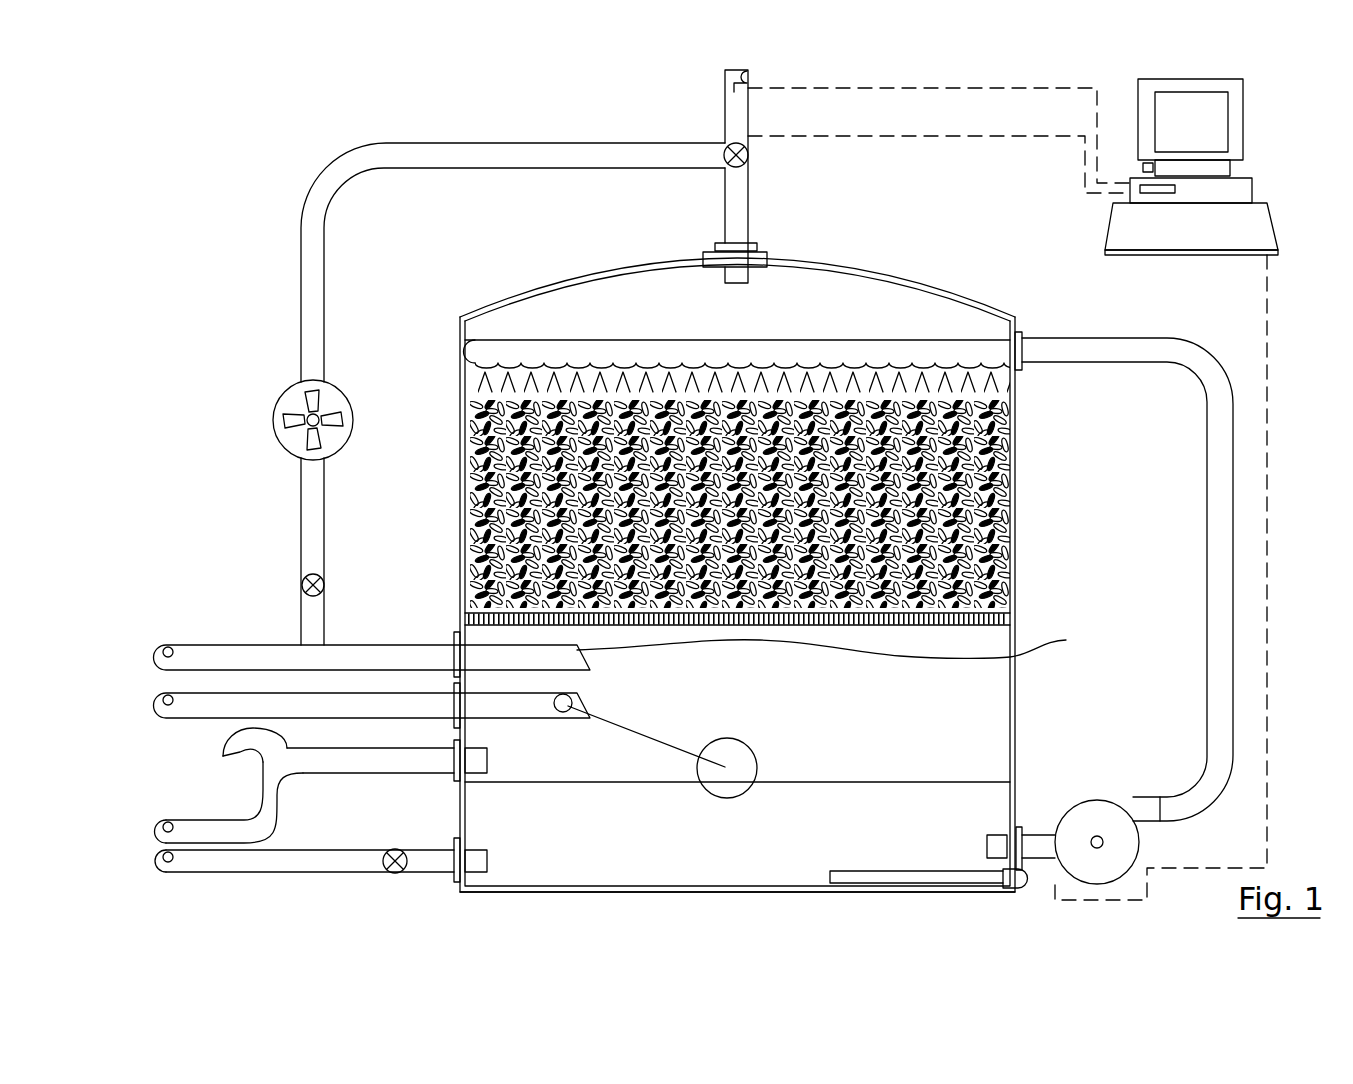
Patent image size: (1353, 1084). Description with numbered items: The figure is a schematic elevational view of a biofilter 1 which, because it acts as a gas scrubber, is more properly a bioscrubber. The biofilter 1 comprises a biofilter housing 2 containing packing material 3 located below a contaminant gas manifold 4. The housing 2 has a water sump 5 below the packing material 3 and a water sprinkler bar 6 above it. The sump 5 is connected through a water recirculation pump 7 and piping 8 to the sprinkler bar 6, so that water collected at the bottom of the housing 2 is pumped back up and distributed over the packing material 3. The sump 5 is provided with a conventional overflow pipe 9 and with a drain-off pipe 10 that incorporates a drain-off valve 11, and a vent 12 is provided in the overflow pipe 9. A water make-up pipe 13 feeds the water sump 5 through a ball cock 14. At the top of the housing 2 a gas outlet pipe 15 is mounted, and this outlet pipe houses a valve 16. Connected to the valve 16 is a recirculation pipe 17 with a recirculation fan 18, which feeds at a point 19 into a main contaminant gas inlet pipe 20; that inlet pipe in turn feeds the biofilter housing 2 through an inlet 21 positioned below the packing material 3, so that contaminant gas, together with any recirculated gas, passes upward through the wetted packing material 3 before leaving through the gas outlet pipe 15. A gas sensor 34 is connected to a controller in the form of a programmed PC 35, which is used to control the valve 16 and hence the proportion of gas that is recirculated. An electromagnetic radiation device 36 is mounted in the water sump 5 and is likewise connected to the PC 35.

The biofilter 1 is at (190, 245).
The biofilter housing 2 is at (938, 286).
The packing material 3 is at (1012, 463).
The contaminant gas manifold 4 is at (767, 252).
The water sump 5 is at (540, 873).
The water sprinkler bar 6 is at (938, 346).
The water recirculation pump 7 is at (1122, 845).
The piping 8 is at (1224, 553).
The overflow pipe 9 is at (378, 760).
The drain-off pipe 10 is at (234, 857).
The drain-off valve 11 is at (385, 852).
The vent 12 is at (228, 745).
The water make-up pipe 13 is at (165, 705).
The ball cock 14 is at (750, 752).
The gas outlet pipe 15 is at (736, 115).
The valve 16 is at (748, 155).
The recirculation pipe 17 is at (308, 334).
The recirculation fan 18 is at (290, 406).
The feed point 19 is at (300, 640).
The main contaminant gas inlet pipe 20 is at (165, 655).
The inlet 21 is at (844, 641).
The gas sensor 34 is at (734, 78).
The programmed PC 35 is at (1212, 118).
The electromagnetic radiation device 36 is at (875, 875).